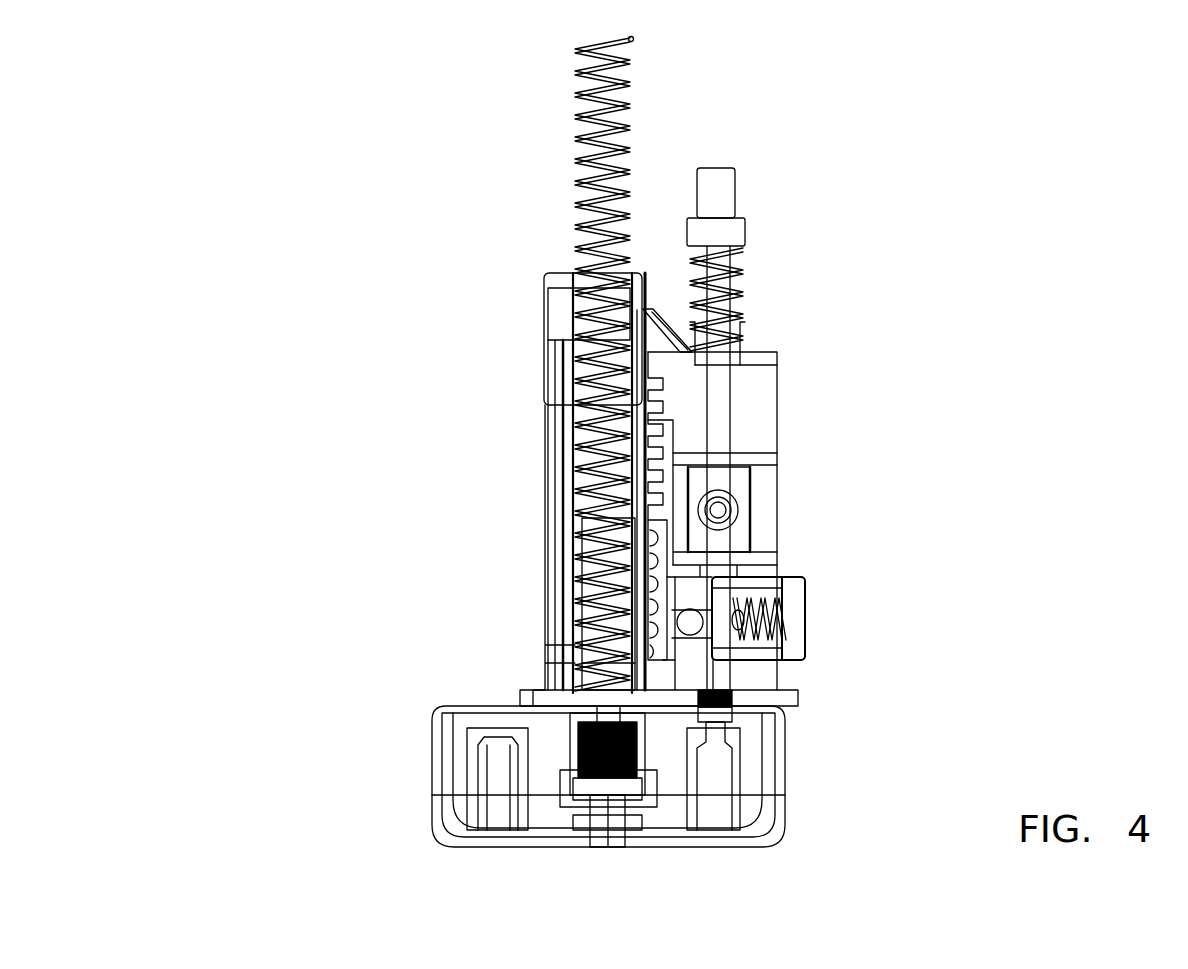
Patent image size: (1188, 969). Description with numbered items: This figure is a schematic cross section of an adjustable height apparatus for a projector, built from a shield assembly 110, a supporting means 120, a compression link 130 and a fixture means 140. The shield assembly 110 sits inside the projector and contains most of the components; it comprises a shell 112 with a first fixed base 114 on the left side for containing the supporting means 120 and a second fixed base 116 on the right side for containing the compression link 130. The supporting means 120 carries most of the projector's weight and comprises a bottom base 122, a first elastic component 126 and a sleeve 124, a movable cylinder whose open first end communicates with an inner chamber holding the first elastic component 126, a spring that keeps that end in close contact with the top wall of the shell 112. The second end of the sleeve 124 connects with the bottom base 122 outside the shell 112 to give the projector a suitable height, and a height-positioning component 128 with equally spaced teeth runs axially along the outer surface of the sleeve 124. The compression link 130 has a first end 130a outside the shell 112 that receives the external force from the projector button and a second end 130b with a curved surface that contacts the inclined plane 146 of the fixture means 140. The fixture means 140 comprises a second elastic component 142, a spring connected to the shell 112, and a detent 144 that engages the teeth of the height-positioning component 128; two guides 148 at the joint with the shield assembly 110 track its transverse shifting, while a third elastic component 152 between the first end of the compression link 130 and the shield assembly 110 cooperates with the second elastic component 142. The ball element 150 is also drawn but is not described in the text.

The shield assembly 110 is at (898, 342).
The shell 112 is at (695, 408).
The first fixed base 114 is at (690, 377).
The second fixed base 116 is at (745, 345).
The supporting means 120 is at (298, 392).
The bottom base 122 is at (440, 756).
The sleeve 124 is at (548, 420).
The first elastic component 126 is at (575, 485).
The height-positioning component 128 is at (640, 578).
The compression link 130 is at (664, 386).
The first end of the compression link 130a is at (728, 193).
The second end of the compression link 130b is at (760, 572).
The fixture means 140 is at (887, 590).
The second elastic component 142 is at (795, 655).
The detent 144 is at (792, 596).
The inclined plane 146 is at (795, 588).
The guides 148 is at (702, 647).
The ball 150 is at (690, 632).
The third elastic component 152 is at (745, 303).